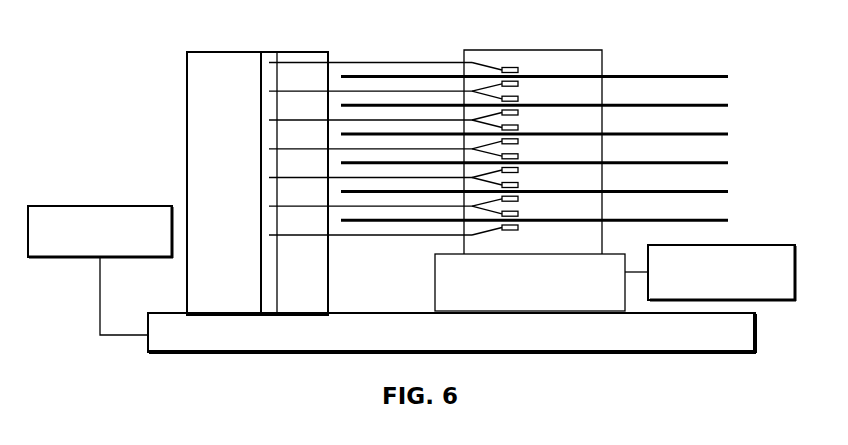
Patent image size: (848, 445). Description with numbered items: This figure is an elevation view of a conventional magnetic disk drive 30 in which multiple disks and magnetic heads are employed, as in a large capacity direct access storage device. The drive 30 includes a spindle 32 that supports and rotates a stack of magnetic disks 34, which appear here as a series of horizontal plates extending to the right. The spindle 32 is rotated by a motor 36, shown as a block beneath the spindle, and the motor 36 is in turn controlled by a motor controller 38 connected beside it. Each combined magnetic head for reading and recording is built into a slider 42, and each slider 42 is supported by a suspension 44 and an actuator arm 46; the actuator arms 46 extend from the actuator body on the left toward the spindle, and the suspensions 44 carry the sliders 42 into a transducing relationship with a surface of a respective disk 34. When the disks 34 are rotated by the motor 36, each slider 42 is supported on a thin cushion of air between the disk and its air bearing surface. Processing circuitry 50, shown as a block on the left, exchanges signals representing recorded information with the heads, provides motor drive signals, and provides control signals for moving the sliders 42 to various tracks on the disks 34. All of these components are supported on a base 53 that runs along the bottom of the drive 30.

The magnetic disk drive 30 is at (648, 50).
The spindle 32 is at (585, 50).
The magnetic disk 34 is at (708, 78).
The motor 36 is at (530, 282).
The motor controller 38 is at (784, 302).
The slider 42 is at (510, 72).
The suspension 44 is at (483, 88).
The actuator arm 46 is at (426, 91).
The processing circuitry 50 is at (80, 205).
The base 53 is at (203, 347).